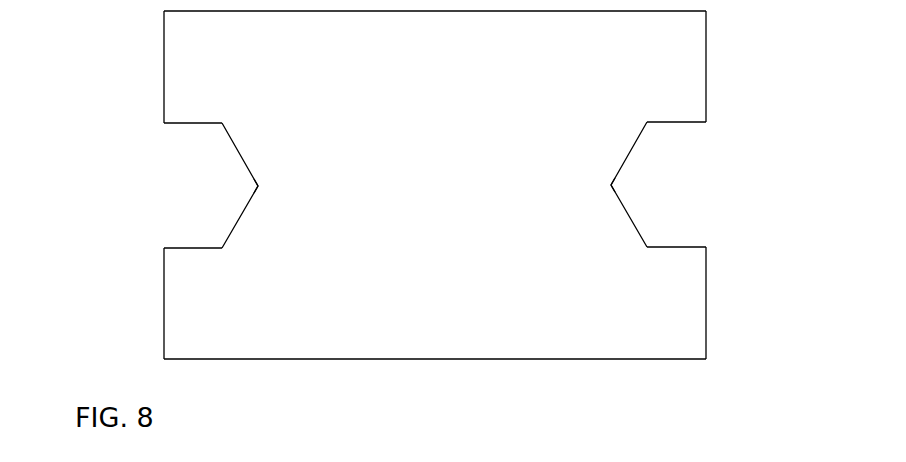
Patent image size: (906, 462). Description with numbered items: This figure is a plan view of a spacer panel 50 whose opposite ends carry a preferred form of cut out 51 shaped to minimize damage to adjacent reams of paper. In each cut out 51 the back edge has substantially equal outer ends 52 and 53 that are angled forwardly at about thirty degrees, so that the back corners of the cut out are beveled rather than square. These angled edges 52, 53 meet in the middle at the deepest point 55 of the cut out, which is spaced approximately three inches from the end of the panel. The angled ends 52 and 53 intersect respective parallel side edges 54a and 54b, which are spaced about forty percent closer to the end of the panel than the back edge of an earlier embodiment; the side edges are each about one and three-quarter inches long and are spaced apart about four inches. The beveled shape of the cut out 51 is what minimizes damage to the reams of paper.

The spacer panel 50 is at (333, 373).
The cut out 51 is at (198, 186).
The outer end of the back edge 52 is at (240, 147).
The outer end of the back edge 53 is at (242, 222).
The side edge 54a is at (192, 124).
The side edge 54b is at (195, 248).
The deepest point of the cut out 55 is at (262, 187).